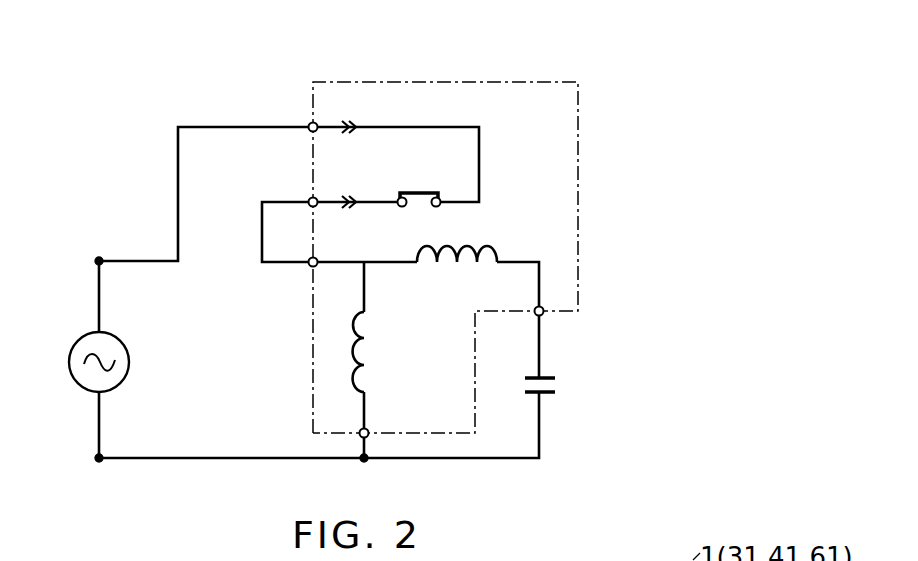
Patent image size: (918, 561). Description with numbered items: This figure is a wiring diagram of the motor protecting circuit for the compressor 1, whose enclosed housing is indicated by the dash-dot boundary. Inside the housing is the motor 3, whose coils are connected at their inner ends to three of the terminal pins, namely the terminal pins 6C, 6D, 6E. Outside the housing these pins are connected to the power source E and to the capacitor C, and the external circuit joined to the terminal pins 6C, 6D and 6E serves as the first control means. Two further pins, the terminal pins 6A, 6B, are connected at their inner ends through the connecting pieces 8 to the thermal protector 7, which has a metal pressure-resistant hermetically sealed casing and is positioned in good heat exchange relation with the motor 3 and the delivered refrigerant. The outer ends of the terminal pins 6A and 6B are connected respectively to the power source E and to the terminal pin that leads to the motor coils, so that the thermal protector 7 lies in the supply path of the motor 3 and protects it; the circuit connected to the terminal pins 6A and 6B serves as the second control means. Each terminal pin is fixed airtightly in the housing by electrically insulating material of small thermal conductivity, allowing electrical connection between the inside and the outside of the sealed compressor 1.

The discharge lamp lighting device 1 is at (491, 80).
The motor 3 is at (508, 240).
The terminal pin 6A is at (311, 124).
The terminal pin 6B is at (311, 199).
The terminal pin 6C is at (309, 268).
The terminal pin 6D is at (368, 437).
The terminal pin 6E is at (543, 314).
The thermal protector 7 is at (426, 190).
The connecting pieces 8 is at (353, 120).
The capacitor C is at (550, 398).
The power source E is at (73, 338).